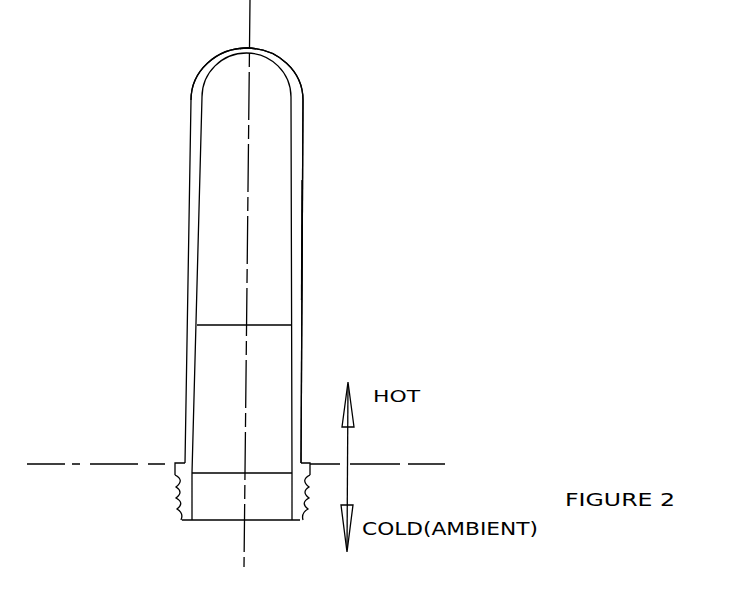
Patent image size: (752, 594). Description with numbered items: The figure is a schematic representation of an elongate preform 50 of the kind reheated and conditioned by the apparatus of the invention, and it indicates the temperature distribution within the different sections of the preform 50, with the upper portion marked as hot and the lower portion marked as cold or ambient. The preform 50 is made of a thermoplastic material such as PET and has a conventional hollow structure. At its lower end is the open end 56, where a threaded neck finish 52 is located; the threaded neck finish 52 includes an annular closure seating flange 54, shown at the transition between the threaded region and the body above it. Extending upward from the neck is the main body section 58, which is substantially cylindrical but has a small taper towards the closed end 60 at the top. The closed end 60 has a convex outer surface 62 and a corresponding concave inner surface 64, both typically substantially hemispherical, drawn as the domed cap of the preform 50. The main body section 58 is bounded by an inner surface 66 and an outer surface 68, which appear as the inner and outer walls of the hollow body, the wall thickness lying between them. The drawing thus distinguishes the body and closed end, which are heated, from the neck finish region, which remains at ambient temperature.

The preform 50 is at (172, 92).
The threaded neck finish 52 is at (155, 468).
The annular closure seating flange 54 is at (178, 466).
The open end 56 is at (227, 531).
The main body section 58 is at (307, 188).
The closed end 60 is at (295, 60).
The convex outer surface 62 is at (270, 46).
The concave inner surface 64 is at (233, 65).
The inner surface 66 is at (285, 268).
The outer surface 68 is at (316, 240).